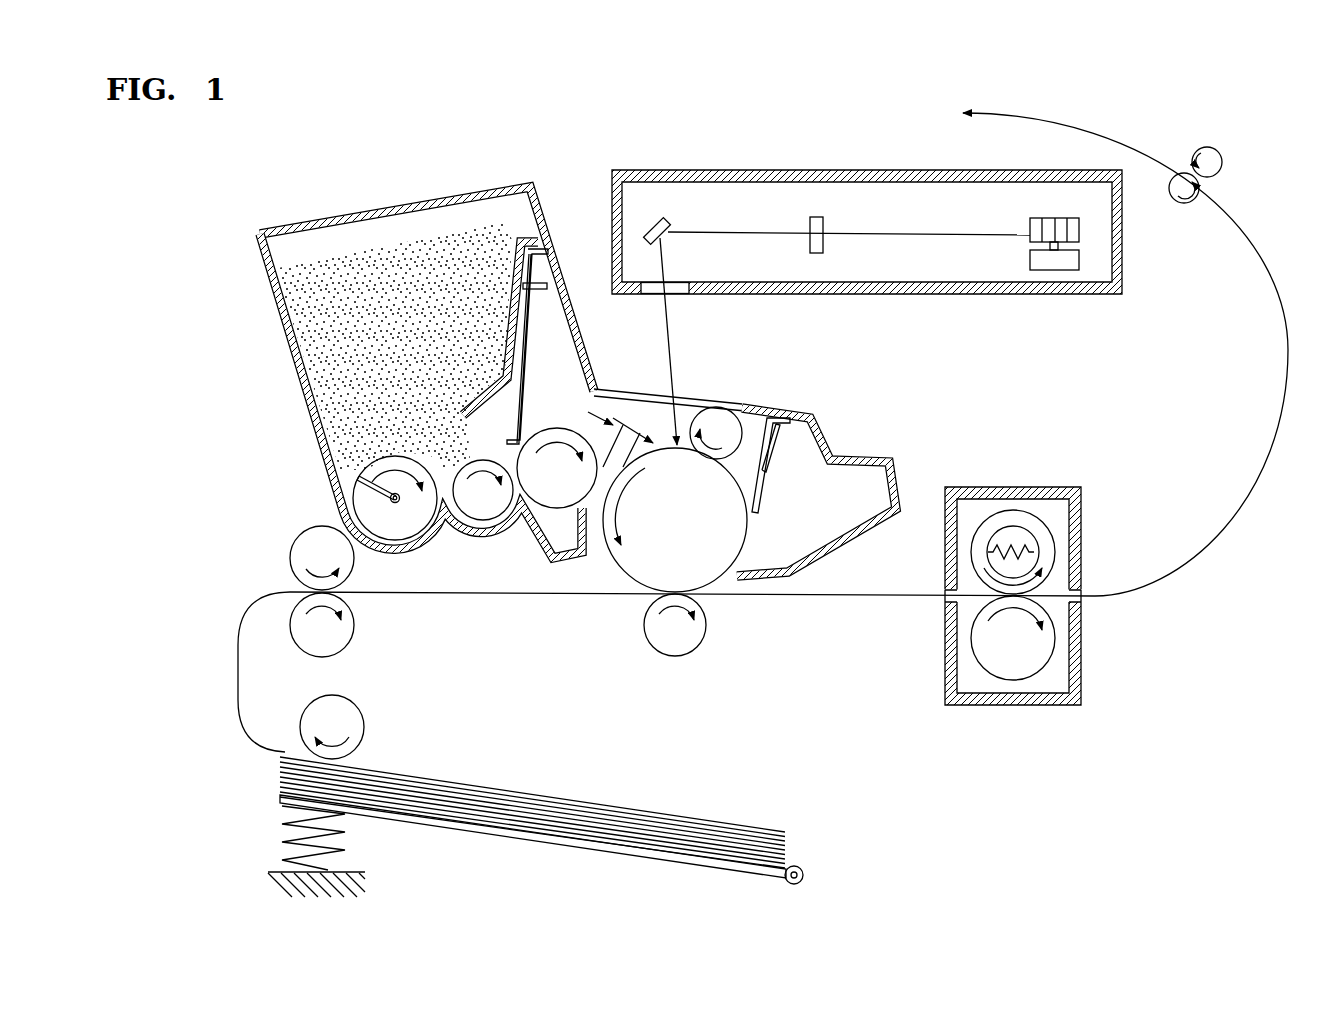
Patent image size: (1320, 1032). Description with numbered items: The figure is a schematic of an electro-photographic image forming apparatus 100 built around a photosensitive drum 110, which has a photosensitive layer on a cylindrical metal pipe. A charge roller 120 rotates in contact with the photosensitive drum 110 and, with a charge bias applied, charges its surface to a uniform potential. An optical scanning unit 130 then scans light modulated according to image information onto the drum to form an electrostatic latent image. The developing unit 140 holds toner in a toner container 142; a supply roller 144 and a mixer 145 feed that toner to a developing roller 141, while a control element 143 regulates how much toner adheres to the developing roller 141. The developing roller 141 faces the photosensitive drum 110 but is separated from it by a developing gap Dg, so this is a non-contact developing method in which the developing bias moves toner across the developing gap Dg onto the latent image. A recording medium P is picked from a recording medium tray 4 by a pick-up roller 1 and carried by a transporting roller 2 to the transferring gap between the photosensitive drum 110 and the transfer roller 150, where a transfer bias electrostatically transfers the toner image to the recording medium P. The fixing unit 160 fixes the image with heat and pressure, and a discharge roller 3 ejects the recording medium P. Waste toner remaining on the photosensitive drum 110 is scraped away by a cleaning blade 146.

The electro-photographic image forming apparatus 100 is at (930, 824).
The photosensitive drum 110 is at (717, 570).
The charge roller 120 is at (695, 402).
The optical scanning unit 130 is at (733, 165).
The developing unit 140 is at (330, 198).
The developing roller 141 is at (545, 440).
The toner container 142 is at (438, 243).
The control element 143 is at (530, 352).
The supply roller 144 is at (474, 505).
The mixer 145 is at (390, 530).
The cleaning blade 146 is at (773, 487).
The transfer roller 150 is at (657, 628).
The fixing unit 160 is at (1024, 722).
The pick-up roller 1 is at (318, 715).
The transporting roller 2 is at (285, 538).
The discharge roller 3 is at (1232, 158).
The recording medium tray 4 is at (487, 830).
The recording medium P is at (1131, 135).
The developing gap Dg is at (620, 430).